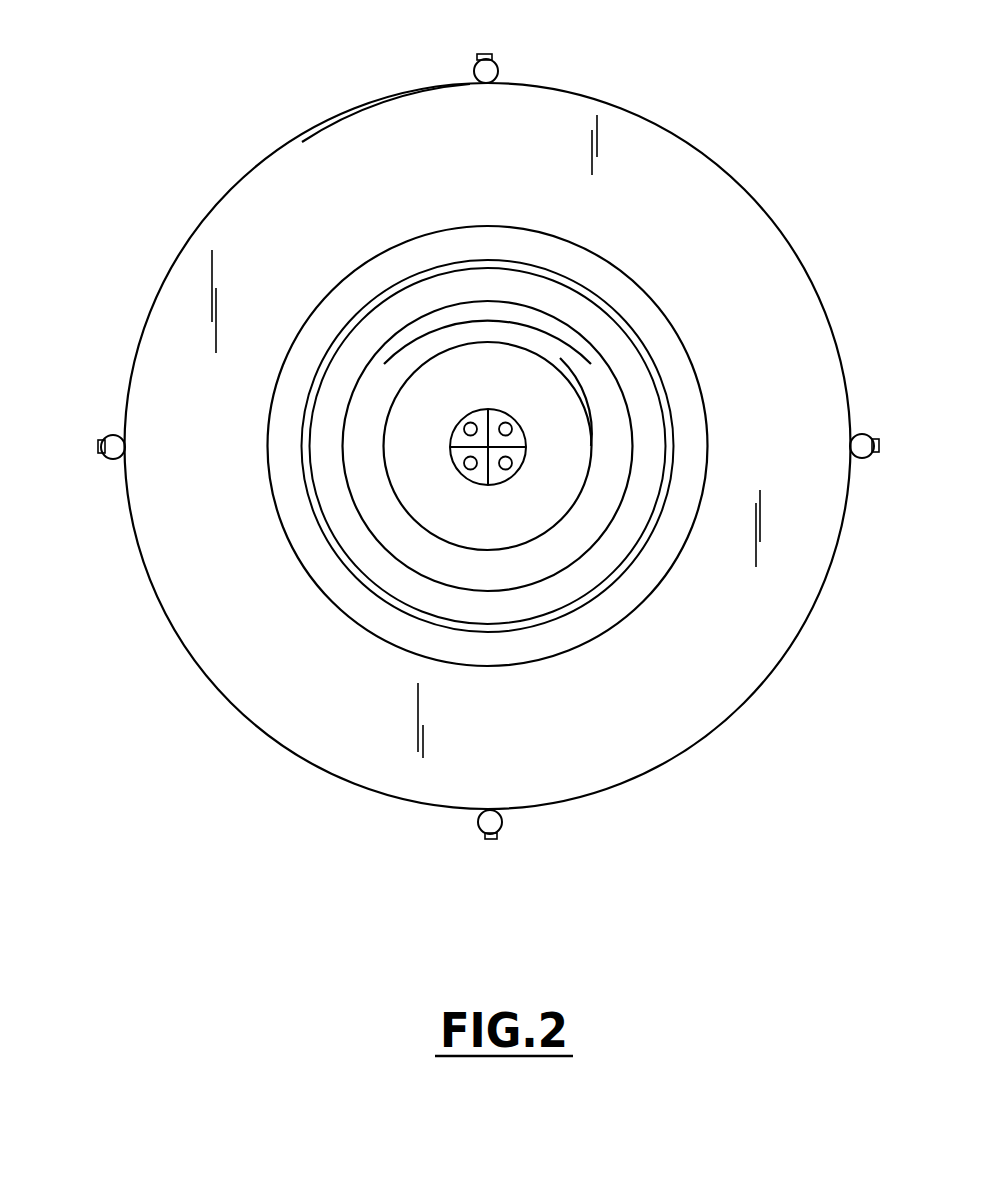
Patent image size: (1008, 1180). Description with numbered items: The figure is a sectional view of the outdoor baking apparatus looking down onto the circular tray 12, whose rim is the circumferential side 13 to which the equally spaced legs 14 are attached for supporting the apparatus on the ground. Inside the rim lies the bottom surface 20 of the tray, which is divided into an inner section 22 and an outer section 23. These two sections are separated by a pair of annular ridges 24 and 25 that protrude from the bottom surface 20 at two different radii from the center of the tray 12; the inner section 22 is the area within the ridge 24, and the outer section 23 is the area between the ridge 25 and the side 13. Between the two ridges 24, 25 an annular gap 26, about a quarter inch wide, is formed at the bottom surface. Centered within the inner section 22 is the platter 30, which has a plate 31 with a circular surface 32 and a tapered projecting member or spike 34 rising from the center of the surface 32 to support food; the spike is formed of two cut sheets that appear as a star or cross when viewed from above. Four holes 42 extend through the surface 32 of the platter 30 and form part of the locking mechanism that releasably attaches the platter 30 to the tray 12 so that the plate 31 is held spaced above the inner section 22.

The circular tray 12 is at (180, 248).
The circumferential side 13 is at (338, 112).
The legs 14 is at (480, 55).
The bottom surface 20 is at (668, 183).
The inner section 22 is at (498, 339).
The outer section 23 is at (507, 173).
The annular ridge 24 is at (600, 326).
The annular ridge 25 is at (670, 346).
The annular gap 26 is at (672, 420).
The platter 30 is at (430, 357).
The plate 31 is at (573, 402).
The circular surface 32 is at (480, 418).
The spike 34 is at (527, 449).
The holes 42 is at (463, 435).